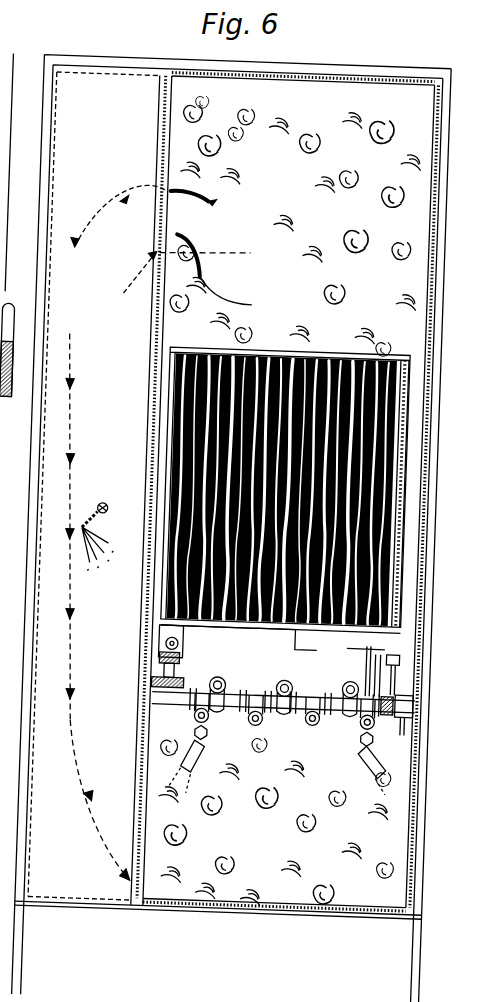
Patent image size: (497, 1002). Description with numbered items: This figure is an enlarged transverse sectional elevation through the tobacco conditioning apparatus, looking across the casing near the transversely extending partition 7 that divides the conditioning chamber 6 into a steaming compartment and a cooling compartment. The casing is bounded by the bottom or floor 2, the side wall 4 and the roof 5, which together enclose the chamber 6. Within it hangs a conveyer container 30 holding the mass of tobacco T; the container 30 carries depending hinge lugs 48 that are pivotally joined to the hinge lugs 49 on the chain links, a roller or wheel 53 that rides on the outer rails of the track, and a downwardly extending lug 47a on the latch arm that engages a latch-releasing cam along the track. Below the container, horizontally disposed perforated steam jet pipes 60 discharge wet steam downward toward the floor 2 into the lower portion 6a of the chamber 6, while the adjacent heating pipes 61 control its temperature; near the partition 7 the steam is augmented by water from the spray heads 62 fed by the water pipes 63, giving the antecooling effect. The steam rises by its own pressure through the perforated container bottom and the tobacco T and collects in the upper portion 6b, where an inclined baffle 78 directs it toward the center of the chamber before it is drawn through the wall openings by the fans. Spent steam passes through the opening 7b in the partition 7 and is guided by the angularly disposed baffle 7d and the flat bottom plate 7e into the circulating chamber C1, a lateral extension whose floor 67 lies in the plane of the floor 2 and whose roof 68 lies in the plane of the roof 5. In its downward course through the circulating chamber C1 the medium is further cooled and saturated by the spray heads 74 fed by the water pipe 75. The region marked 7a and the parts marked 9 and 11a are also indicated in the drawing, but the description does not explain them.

The bottom or floor 2 is at (260, 914).
The side wall 4 is at (165, 364).
The roof 5 is at (297, 73).
The conditioning chamber 6 is at (20, 262).
The lower portion of the conditioning chamber 6a is at (276, 823).
The upper portion of the conditioning chamber 6b is at (298, 217).
The transversely extending partition 7 is at (328, 103).
The lower gas region 7a is at (364, 337).
The opening in the partition 7b is at (181, 107).
The angularly disposed baffle 7d is at (228, 206).
The flat bottom plate 7e is at (245, 264).
The outer wall 9 is at (13, 165).
The pipe bracket 11a is at (162, 690).
The container 30 is at (400, 405).
The downwardly extending lug 47a is at (359, 669).
The depending hinge lugs 48 is at (165, 633).
The hinge lugs 49 is at (183, 646).
The roller or wheel 53 is at (398, 731).
The perforated steam jet pipes 60 is at (330, 660).
The heating pipes 61 is at (202, 720).
The spray heads 62 is at (195, 756).
The water pipes 63 is at (205, 735).
The floor of the extension 67 is at (88, 904).
The roof of the extension 68 is at (106, 79).
The spray heads 74 is at (88, 531).
The water pipe 75 is at (106, 510).
The inclined baffle 78 is at (226, 275).
The mass of tobacco T is at (228, 430).
The circulating chamber C1 is at (107, 532).